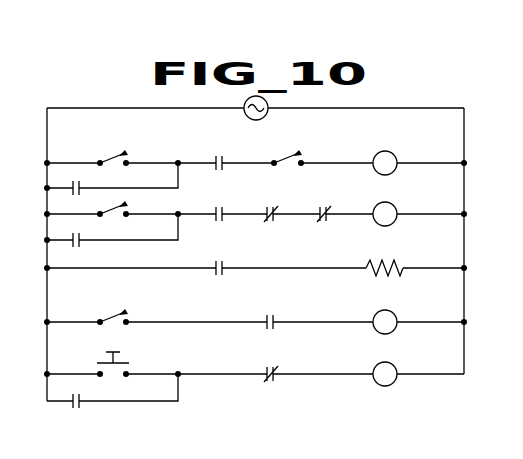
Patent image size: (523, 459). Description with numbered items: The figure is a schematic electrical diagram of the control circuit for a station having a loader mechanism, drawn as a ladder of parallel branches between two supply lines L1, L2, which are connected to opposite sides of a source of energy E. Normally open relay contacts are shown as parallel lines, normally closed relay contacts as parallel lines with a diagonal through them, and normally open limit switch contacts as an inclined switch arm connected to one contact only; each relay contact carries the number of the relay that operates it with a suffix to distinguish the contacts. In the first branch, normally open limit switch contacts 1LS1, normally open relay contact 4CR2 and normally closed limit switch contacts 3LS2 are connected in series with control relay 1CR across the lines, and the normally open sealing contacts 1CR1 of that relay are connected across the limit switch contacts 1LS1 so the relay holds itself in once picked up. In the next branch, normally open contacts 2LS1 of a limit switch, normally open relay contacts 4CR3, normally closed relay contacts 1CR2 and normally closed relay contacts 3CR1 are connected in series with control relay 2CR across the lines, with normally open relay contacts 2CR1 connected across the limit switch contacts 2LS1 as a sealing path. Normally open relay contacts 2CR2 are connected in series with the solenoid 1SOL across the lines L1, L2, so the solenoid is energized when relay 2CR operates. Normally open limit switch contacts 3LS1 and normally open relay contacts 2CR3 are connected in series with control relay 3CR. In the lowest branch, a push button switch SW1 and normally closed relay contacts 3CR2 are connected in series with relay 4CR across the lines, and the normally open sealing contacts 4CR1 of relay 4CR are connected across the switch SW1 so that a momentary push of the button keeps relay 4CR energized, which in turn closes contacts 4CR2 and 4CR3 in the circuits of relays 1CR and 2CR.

The line L1 is at (47, 133).
The line L2 is at (464, 144).
The source of energy E is at (267, 103).
The normally open limit switch contacts 1LS1 is at (114, 156).
The normally open relay contact 4CR2 is at (215, 156).
The normally closed limit switch contacts 3LS2 is at (288, 156).
The control relay 1CR is at (378, 152).
The normally open sealing contacts 1CR1 is at (79, 186).
The normally open limit switch contacts 2LS1 is at (108, 210).
The normally open relay contacts 4CR3 is at (211, 209).
The normally closed relay contacts 1CR2 is at (283, 196).
The normally closed relay contacts 3CR1 is at (328, 208).
The control relay 2CR is at (378, 205).
The normally open relay contacts 2CR1 is at (79, 238).
The normally open relay contacts 2CR2 is at (225, 262).
The solenoid 1SOL is at (366, 267).
The normally open limit switch contacts 3LS1 is at (104, 315).
The normally open relay contacts 2CR3 is at (276, 313).
The control relay 3CR is at (378, 313).
The push button switch SW1 is at (121, 361).
The normally closed relay contacts 3CR2 is at (278, 367).
The relay 4CR is at (388, 364).
The normally open sealing contacts 4CR1 is at (79, 404).